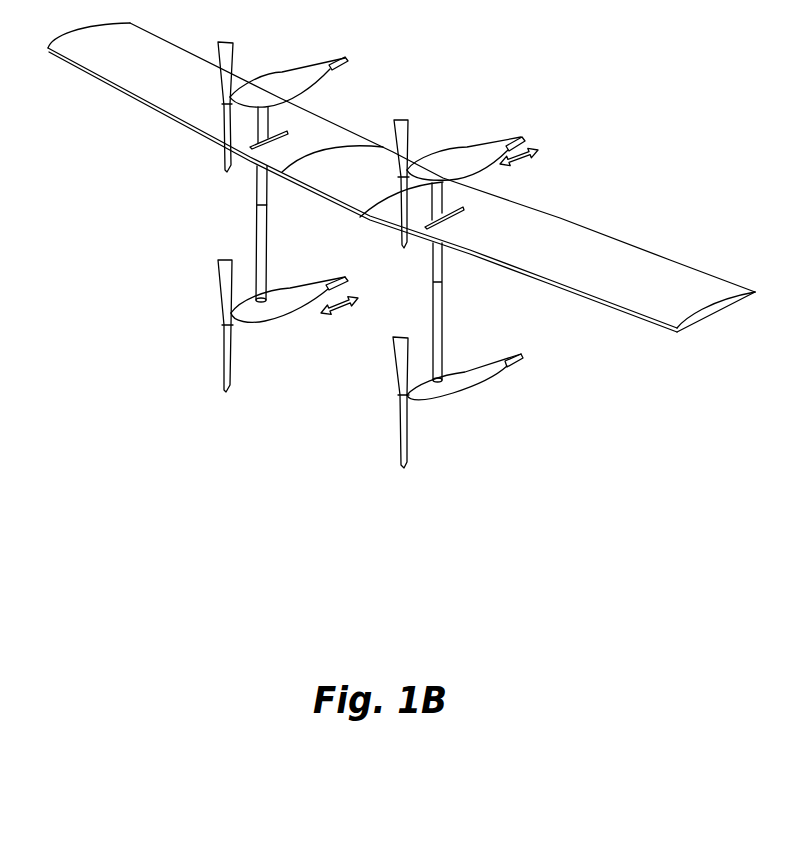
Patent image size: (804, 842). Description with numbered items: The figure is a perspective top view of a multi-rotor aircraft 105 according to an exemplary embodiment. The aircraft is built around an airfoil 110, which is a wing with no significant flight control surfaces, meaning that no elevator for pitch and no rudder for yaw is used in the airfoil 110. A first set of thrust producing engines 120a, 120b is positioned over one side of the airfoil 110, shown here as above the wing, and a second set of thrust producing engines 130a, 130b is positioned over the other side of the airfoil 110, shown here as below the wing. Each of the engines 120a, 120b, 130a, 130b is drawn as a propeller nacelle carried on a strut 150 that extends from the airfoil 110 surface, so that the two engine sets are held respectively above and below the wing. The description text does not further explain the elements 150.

The multi-rotor aircraft 105 is at (646, 81).
The airfoil 110 is at (635, 264).
The thrust producing engine 120a is at (468, 156).
The thrust producing engine 120b is at (293, 78).
The thrust producing engine 130a is at (470, 380).
The thrust producing engine 130b is at (280, 313).
The pylon 150 is at (263, 122).